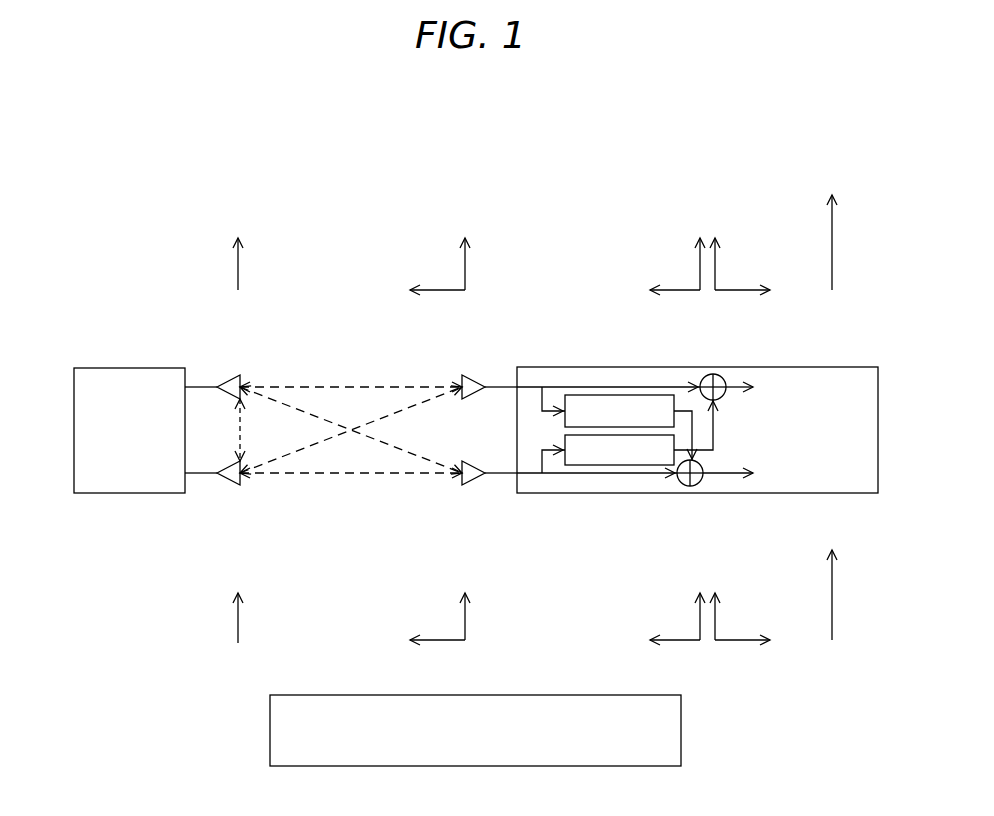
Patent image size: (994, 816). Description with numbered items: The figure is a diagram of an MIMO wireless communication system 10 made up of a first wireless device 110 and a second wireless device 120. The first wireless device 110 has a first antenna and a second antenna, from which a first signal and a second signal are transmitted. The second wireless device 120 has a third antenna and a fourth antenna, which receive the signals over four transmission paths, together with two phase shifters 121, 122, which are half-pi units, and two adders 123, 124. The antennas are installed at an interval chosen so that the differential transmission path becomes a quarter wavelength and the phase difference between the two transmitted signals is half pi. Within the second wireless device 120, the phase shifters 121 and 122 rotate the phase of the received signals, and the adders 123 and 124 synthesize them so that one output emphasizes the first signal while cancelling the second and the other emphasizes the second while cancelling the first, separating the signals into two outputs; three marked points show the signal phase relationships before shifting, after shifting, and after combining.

The wireless communication system 10 is at (482, 98).
The first wireless device 110 is at (132, 368).
The second wireless device 120 is at (846, 367).
The phase shifter 121 is at (612, 394).
The phase shifter 122 is at (606, 466).
The adder 123 is at (716, 374).
The adder 124 is at (695, 486).